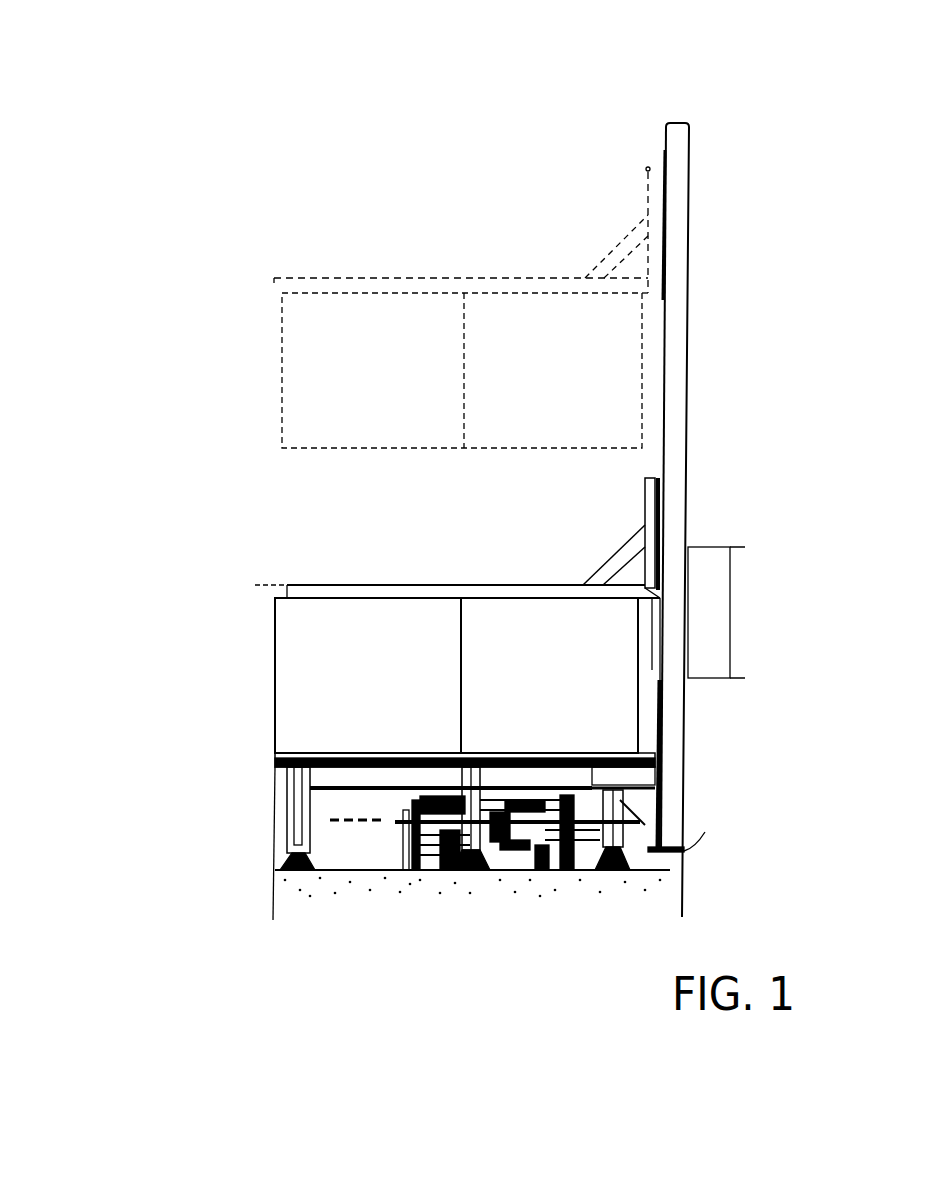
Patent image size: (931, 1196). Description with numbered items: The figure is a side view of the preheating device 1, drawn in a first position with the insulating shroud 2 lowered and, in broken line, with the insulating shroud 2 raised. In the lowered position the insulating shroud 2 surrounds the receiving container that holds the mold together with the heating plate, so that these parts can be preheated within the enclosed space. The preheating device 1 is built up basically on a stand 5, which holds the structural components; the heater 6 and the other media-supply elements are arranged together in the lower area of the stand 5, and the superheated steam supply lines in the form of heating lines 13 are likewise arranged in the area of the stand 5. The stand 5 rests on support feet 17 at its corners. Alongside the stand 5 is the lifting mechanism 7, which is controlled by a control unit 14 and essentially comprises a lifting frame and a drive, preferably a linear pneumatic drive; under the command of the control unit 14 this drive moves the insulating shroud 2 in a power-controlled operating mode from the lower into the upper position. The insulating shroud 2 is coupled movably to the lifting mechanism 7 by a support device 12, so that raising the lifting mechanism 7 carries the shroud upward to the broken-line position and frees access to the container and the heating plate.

The preheating device 1 is at (365, 185).
The insulating shroud 2 is at (318, 386).
The stand 5 is at (280, 792).
The heater 6 is at (430, 840).
The lifting mechanism 7 is at (745, 315).
The support device 12 is at (628, 545).
The heating lines 13 is at (290, 862).
The control unit 14 is at (708, 598).
The support feet 17 is at (298, 820).